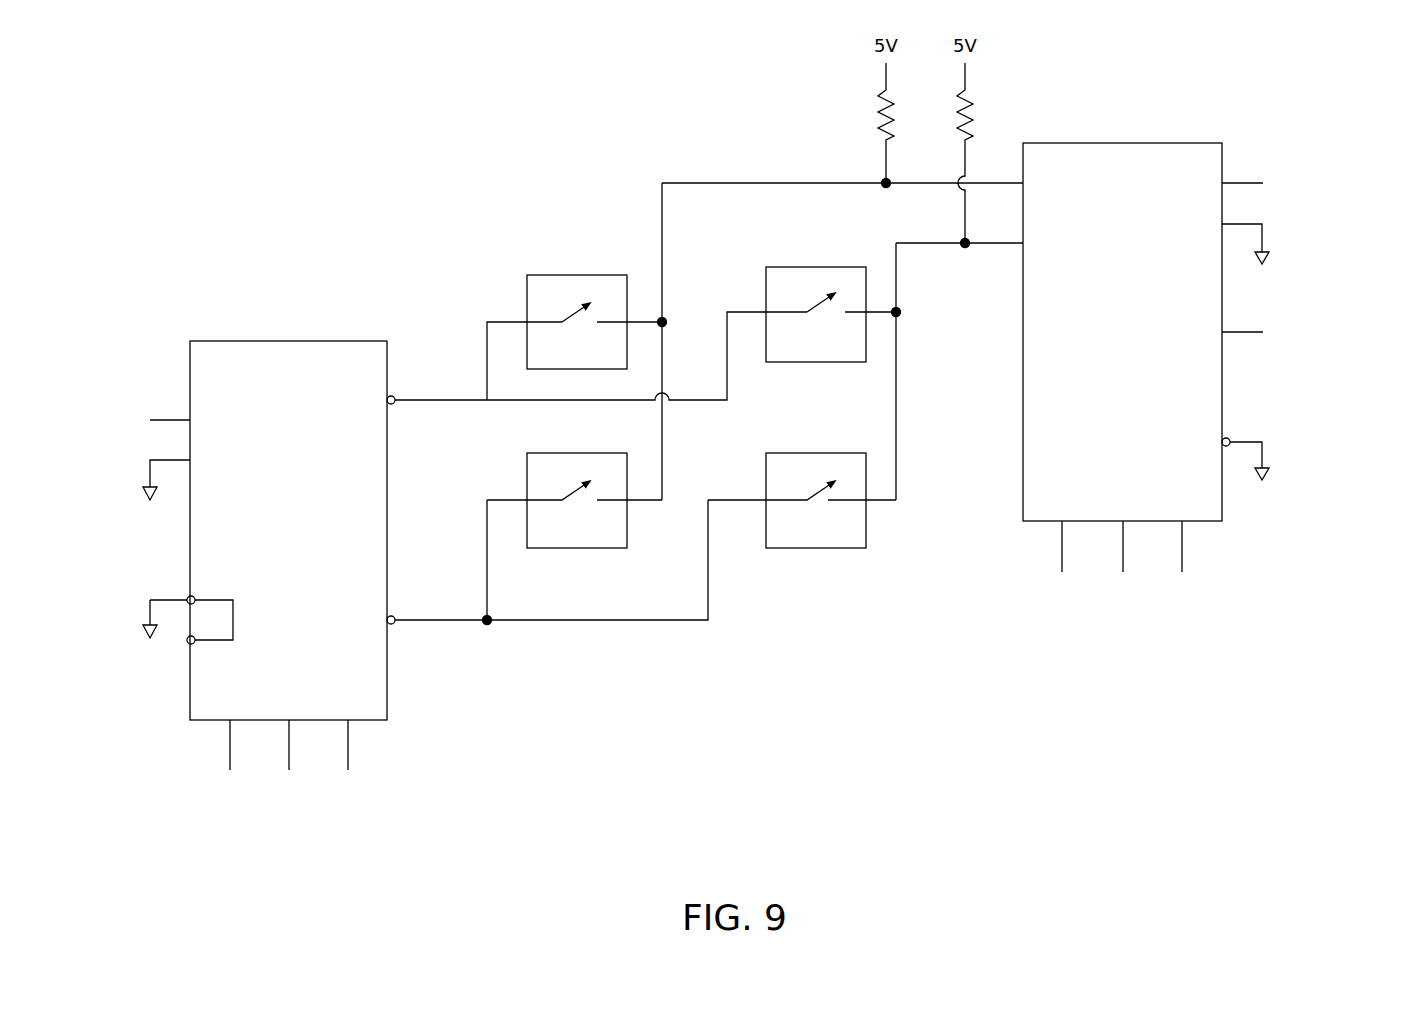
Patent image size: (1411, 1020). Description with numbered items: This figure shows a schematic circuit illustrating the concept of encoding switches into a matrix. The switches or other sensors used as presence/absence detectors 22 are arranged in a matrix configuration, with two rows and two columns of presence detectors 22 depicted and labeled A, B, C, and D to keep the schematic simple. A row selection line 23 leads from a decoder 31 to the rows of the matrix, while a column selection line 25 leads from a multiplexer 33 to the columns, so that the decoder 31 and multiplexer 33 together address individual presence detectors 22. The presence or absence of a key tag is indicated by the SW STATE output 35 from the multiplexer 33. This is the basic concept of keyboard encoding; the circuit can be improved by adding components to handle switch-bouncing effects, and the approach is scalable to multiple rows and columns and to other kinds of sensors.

The presence/absence detector 22 is at (577, 273).
The row selection line 23 is at (417, 400).
The column selection line 25 is at (662, 262).
The decoder 31 is at (190, 378).
The multiplexer 33 is at (1223, 162).
The SW STATE output 35 is at (1317, 318).